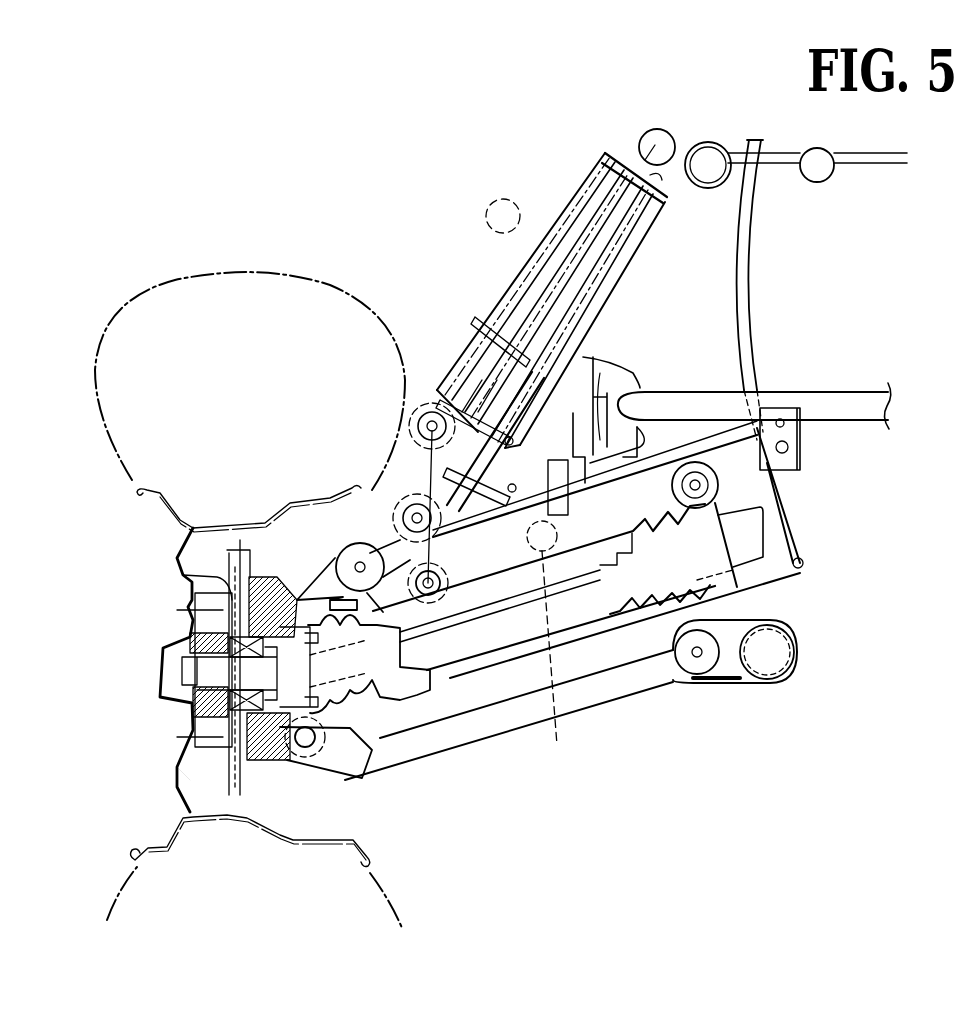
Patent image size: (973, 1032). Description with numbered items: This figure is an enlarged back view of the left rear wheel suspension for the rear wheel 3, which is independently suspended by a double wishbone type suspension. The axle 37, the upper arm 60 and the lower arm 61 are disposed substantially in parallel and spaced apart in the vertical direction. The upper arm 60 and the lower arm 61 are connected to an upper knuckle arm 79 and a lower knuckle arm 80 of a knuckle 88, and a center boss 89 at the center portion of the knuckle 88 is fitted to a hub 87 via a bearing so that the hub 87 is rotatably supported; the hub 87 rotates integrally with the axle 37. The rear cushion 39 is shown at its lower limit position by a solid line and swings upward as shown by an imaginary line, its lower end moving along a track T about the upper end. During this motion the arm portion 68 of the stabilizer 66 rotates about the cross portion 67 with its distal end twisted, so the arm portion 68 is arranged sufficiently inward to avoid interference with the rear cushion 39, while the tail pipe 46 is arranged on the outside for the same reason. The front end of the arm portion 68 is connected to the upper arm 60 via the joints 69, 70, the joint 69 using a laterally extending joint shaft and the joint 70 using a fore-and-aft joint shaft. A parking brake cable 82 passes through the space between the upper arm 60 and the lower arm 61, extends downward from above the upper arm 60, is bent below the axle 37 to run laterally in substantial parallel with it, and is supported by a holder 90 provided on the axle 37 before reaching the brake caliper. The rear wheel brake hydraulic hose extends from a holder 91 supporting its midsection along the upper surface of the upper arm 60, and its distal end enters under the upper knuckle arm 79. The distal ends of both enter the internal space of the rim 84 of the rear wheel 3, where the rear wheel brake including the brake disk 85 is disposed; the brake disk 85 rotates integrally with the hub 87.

The rear wheel 3 is at (118, 300).
The axle 37 is at (480, 653).
The rear cushion 39 is at (624, 267).
The tail pipe 46 is at (500, 200).
The upper arm 60 is at (593, 530).
The lower arm 61 is at (587, 703).
The stabilizer 66 is at (878, 362).
The cross portion 67 is at (818, 390).
The arm portion 68 is at (605, 367).
The joint 69 is at (503, 440).
The joint 70 is at (548, 649).
The upper knuckle arm 79 is at (320, 565).
The lower knuckle arm 80 is at (277, 763).
The parking brake cable 82 is at (748, 260).
The rim 84 is at (290, 497).
The brake disk 85 is at (170, 770).
The hub 87 is at (187, 640).
The knuckle 88 is at (192, 537).
The center boss 89 is at (173, 577).
The holder 90 is at (423, 670).
The holder 91 is at (800, 450).
The track T is at (415, 463).